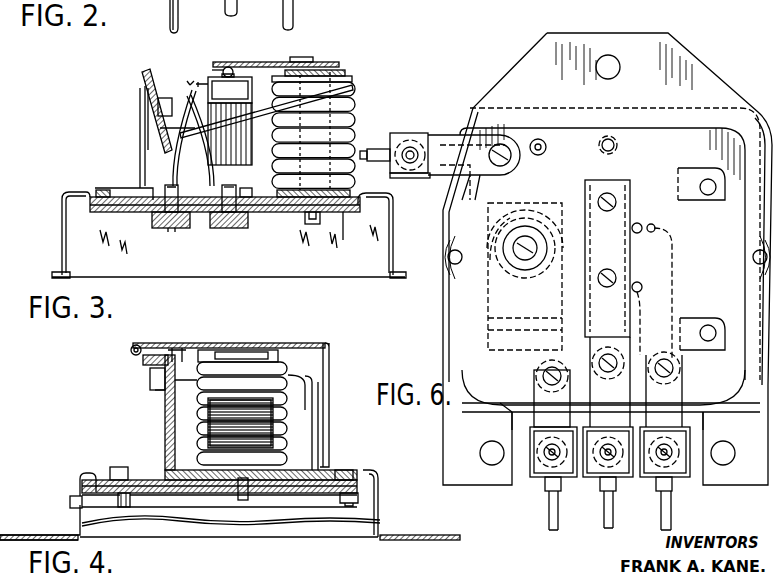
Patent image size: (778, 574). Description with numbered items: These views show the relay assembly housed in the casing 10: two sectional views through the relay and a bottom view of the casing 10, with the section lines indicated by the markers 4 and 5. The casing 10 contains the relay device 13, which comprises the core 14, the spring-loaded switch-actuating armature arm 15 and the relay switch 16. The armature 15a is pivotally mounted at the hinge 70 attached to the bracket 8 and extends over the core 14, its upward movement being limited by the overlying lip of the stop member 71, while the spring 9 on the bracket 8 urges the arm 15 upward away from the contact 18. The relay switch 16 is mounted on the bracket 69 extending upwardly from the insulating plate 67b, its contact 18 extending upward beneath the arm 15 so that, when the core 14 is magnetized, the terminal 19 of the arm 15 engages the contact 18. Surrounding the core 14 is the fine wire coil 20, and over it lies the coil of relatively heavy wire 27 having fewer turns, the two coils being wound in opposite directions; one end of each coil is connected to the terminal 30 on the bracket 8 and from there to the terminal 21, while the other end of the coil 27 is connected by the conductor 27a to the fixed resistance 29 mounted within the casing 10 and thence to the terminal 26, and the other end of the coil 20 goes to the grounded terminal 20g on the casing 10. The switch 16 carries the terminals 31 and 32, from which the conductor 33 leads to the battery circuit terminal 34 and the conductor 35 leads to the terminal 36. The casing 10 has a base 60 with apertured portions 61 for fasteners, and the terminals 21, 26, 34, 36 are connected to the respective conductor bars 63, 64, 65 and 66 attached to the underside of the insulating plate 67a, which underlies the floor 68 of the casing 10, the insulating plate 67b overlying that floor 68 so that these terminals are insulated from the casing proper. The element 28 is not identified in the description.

In FIG. 3, the section line 4 is at (302, 6).
In FIG. 3, the section line 5 is at (205, 27).
In FIG. 4, the bracket 8 is at (165, 431).
In FIG. 6, the bracket 8 is at (488, 318).
In FIG. 4, the spring element 9 is at (168, 348).
In FIG. 6, the casing 10 is at (710, 70).
In FIG. 3, the relay device 13 is at (358, 100).
In FIG. 3, the core 14 is at (342, 72).
In FIG. 4, the core 14 is at (247, 350).
In FIG. 3, the armature arm 15 is at (262, 62).
In FIG. 3, the armature 15a is at (312, 58).
In FIG. 4, the armature 15a is at (268, 343).
In FIG. 3, the relay switch 16 is at (207, 85).
In FIG. 4, the relay switch 16 is at (150, 382).
In FIG. 6, the relay switch 16 is at (594, 323).
In FIG. 3, the contact 18 is at (214, 68).
In FIG. 3, the terminal 19 is at (226, 67).
In FIG. 4, the fine wire coil 20 is at (274, 430).
In FIG. 6, the fine wire coil 20 is at (531, 262).
In FIG. 6, the grounded terminal 20g is at (606, 138).
In FIG. 3, the terminal 21 is at (399, 136).
In FIG. 4, the terminal 26 is at (72, 499).
In FIG. 6, the terminal 26 is at (548, 468).
In FIG. 3, the heavy wire coil 27 is at (355, 117).
In FIG. 4, the heavy wire coil 27 is at (207, 456).
In FIG. 6, the heavy wire coil 27 is at (498, 272).
In FIG. 3, the conductor 27a is at (248, 188).
In FIG. 3, the block 28 is at (162, 98).
In FIG. 3, the fixed resistance 29 is at (141, 79).
In FIG. 6, the terminal 30 is at (504, 144).
In FIG. 6, the terminal 31 is at (640, 282).
In FIG. 6, the terminal 32 is at (638, 222).
In FIG. 3, the conductor 33 is at (172, 160).
In FIG. 6, the conductor 33 is at (643, 305).
In FIG. 6, the battery circuit terminal 34 is at (604, 470).
In FIG. 3, the conductor 35 is at (172, 170).
In FIG. 6, the conductor 35 is at (660, 262).
In FIG. 6, the terminal 36 is at (657, 470).
In FIG. 3, the base 60 is at (397, 236).
In FIG. 4, the base 60 is at (393, 532).
In FIG. 6, the base 60 is at (590, 33).
In FIG. 4, the apertured portions 61 is at (422, 533).
In FIG. 6, the apertured portions 61 is at (609, 55).
In FIG. 6, the conductor bar 63 is at (430, 134).
In FIG. 4, the conductor bar 64 is at (130, 502).
In FIG. 6, the conductor bar 64 is at (540, 378).
In FIG. 3, the conductor bar 65 is at (236, 229).
In FIG. 6, the conductor bar 65 is at (596, 366).
In FIG. 3, the conductor bar 66 is at (172, 229).
In FIG. 6, the conductor bar 66 is at (676, 371).
In FIG. 3, the insulating plate 67a is at (345, 240).
In FIG. 4, the insulating plate 67a is at (302, 497).
In FIG. 6, the insulating plate 67a is at (635, 128).
In FIG. 3, the insulating plate 67b is at (140, 197).
In FIG. 4, the insulating plate 67b is at (146, 480).
In FIG. 3, the floor 68 is at (102, 190).
In FIG. 4, the floor 68 is at (103, 478).
In FIG. 3, the bracket 69 is at (286, 199).
In FIG. 4, the bracket 69 is at (156, 391).
In FIG. 6, the bracket 69 is at (622, 172).
In FIG. 4, the hinge 70 is at (131, 349).
In FIG. 4, the stop member 71 is at (329, 352).